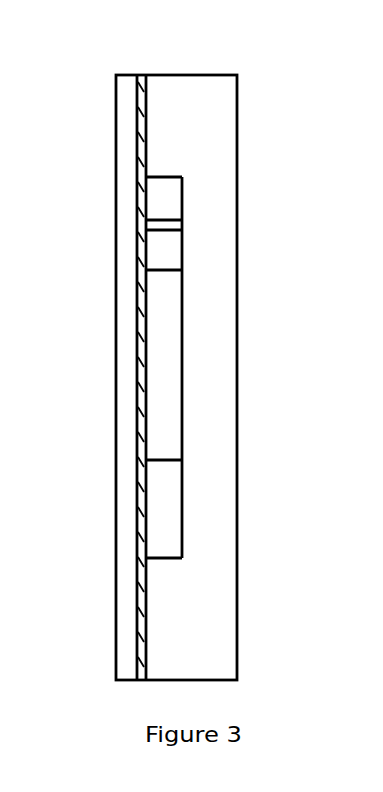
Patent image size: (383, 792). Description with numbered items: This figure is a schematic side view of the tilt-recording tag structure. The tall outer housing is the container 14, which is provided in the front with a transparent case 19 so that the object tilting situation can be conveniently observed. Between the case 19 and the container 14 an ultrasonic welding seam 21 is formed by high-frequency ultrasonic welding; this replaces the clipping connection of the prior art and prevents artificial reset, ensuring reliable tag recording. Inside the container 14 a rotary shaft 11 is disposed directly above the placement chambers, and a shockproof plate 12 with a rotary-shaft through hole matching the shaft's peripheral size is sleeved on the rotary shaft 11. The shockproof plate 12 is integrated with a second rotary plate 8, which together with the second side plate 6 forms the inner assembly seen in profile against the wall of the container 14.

The second side plate 6 is at (218, 488).
The second rotary plate 8 is at (218, 367).
The rotary shaft 11 is at (224, 167).
The shockproof plate 12 is at (224, 129).
The container 14 is at (205, 377).
The case 19 is at (94, 377).
The ultrasonic welding seam 21 is at (99, 377).